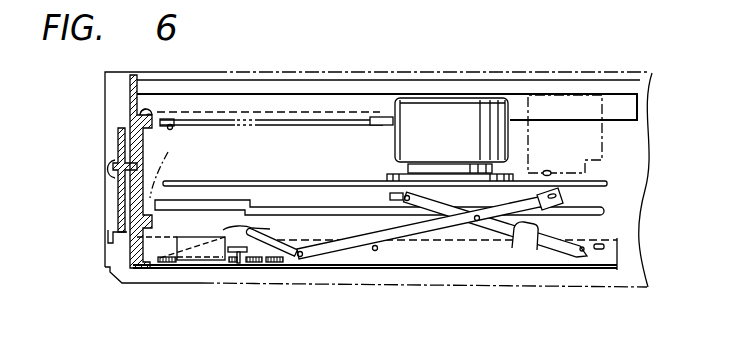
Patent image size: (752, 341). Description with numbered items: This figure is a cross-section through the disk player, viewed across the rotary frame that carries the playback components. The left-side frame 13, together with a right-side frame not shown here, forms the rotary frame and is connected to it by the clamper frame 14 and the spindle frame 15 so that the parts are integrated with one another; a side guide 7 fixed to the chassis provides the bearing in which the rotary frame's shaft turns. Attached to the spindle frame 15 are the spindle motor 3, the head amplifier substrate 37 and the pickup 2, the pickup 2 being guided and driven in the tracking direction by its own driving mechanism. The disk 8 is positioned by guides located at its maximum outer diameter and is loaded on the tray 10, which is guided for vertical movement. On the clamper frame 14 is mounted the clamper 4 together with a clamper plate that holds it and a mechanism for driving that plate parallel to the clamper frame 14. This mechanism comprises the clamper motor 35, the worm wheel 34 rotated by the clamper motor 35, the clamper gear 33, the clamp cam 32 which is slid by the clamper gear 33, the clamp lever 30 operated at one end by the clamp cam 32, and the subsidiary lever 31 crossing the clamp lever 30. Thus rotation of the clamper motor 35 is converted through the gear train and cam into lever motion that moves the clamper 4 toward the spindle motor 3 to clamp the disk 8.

The pickup 2 is at (588, 147).
The spindle motor 3 is at (428, 113).
The clamper 4 is at (386, 185).
The side guides 7 is at (118, 142).
The disk 8 is at (280, 180).
The tray 10 is at (173, 170).
The left-side frame 13 is at (129, 123).
The clamper frame 14 is at (428, 263).
The spindle frame 15 is at (200, 89).
The clamp lever 30 is at (363, 254).
The subsidiary lever 31 is at (514, 232).
The clamp cam 32 is at (289, 262).
The clamper gear 33 is at (258, 263).
The worm wheel 34 is at (238, 262).
The clamper motor 35 is at (200, 252).
The head amplifier substrate 37 is at (302, 121).